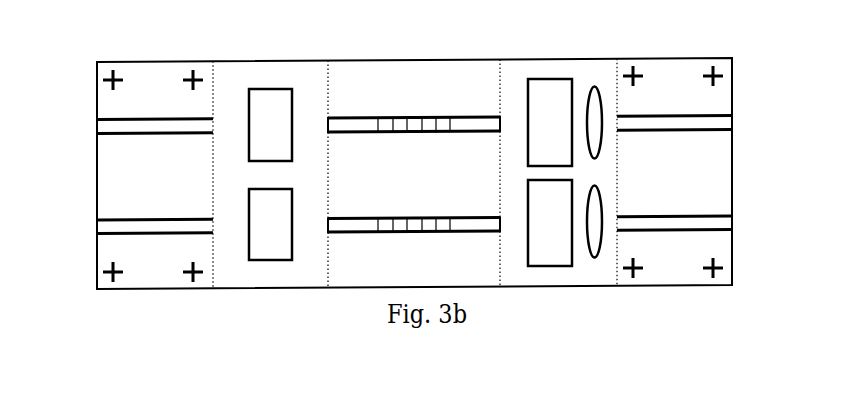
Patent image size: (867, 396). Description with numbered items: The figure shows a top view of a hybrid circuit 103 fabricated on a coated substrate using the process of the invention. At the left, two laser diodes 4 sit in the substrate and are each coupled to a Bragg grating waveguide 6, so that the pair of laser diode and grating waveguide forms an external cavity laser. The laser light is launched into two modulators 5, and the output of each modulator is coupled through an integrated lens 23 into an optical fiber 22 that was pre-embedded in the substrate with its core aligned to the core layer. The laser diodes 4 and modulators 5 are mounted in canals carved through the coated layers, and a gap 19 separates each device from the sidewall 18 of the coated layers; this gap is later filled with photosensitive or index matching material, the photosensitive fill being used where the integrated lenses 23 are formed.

The hybrid circuit 103 is at (120, 176).
The laser diode 4 is at (270, 95).
The sidewall 18 is at (328, 90).
The gap 19 is at (294, 252).
The Bragg grating waveguide 6 is at (414, 123).
The modulator 5 is at (550, 85).
The integrated lens 23 is at (594, 86).
The optical fiber 22 is at (725, 122).